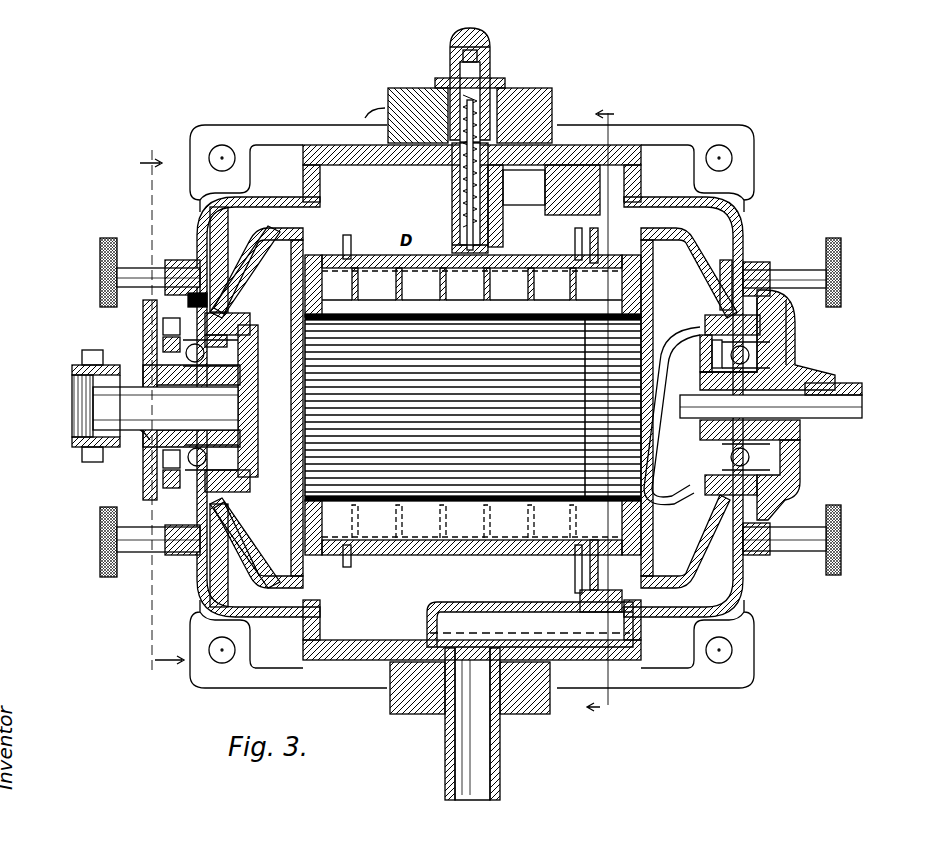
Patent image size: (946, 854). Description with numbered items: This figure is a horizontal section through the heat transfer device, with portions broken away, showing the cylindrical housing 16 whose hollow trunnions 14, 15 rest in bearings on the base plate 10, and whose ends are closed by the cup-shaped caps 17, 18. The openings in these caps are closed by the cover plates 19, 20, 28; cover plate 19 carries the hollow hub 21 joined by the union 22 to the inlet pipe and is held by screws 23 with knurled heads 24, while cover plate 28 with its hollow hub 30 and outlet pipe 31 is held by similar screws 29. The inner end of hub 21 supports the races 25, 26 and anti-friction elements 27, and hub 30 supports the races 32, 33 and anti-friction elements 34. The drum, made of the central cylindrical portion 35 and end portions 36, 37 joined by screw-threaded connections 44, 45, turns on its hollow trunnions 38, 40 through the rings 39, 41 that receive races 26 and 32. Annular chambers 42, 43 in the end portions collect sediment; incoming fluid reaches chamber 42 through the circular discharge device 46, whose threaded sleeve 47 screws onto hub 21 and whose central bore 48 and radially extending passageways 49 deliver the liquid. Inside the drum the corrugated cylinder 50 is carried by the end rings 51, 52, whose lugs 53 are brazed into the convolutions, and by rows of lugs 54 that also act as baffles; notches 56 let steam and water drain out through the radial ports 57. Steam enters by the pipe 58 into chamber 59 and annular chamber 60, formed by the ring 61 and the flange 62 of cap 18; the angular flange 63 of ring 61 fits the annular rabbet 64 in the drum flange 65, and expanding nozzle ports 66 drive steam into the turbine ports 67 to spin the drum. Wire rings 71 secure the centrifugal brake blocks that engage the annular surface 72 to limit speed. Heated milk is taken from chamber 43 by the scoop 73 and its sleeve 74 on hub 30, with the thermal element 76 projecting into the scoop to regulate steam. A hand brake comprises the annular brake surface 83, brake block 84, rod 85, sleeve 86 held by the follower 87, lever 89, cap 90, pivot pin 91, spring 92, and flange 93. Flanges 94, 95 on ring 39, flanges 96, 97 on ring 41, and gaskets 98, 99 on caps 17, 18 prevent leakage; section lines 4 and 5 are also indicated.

The base plate 10 is at (700, 680).
The hollow trunnion 14 is at (528, 714).
The hollow trunnion 15 is at (432, 88).
The cylindrical housing 16 is at (600, 660).
The cup-shaped cap 17 is at (232, 200).
The cup-shaped cap 18 is at (725, 205).
The cover plate 19 is at (143, 345).
The cover plate 20 is at (796, 335).
The hollow hub 21 is at (143, 450).
The union 22 is at (90, 402).
The screws 23 is at (178, 262).
The knurled heads 24 is at (100, 262).
The race 25 is at (170, 460).
The race 26 is at (235, 315).
The anti-friction elements 27 is at (220, 478).
The cover plate 28 is at (800, 460).
The screws 29 is at (755, 265).
The hollow hub 30 is at (838, 378).
The pipe 31 is at (850, 420).
The race 32 is at (704, 340).
The race 33 is at (715, 352).
The anti-friction elements 34 is at (752, 356).
The central cylindrical portion 35 is at (405, 262).
The end portion 36 is at (232, 290).
The end portion 37 is at (724, 262).
The hollow trunnion 38 is at (220, 336).
The ring 39 is at (163, 325).
The hollow trunnion 40 is at (735, 322).
The ring 41 is at (796, 322).
The annular chamber 42 is at (272, 228).
The annular chamber 43 is at (672, 240).
The screw-threaded connection 44 is at (338, 258).
The screw-threaded connection 45 is at (642, 259).
The circular discharge device 46 is at (258, 390).
The threaded sleeve 47 is at (240, 453).
The central bore 48 is at (245, 430).
The radially extending passageways 49 is at (236, 466).
The corrugated cylinder 50 is at (570, 330).
The end ring 51 is at (303, 292).
The end ring 52 is at (642, 281).
The lugs or teeth 53 is at (304, 305).
The lugs 54 is at (530, 290).
The notches 56 is at (462, 556).
The radially extending ports 57 is at (350, 236).
The pipe 58 is at (500, 765).
The chamber 59 is at (462, 602).
The annular chamber 60 is at (545, 188).
The ring 61 is at (565, 214).
The flange 62 is at (645, 150).
The angular flange 63 is at (575, 588).
The annular rabbet 64 is at (576, 235).
The flange 65 is at (575, 250).
The expanding nozzle ports 66 is at (598, 198).
The turbine ports 67 is at (596, 262).
The wire rings 71 is at (163, 343).
The annular surface 72 is at (160, 300).
The scoop 73 is at (685, 500).
The sleeve 74 is at (705, 380).
The thermal element 76 is at (865, 408).
The annular brake surface 83 is at (462, 250).
The brake block 84 is at (465, 238).
The rod 85 is at (462, 190).
The sleeve 86 is at (420, 120).
The follower 87 is at (505, 82).
The lever 89 is at (480, 62).
The cap 90 is at (455, 72).
The pivot pin 91 is at (492, 45).
The spring 92 is at (420, 128).
The flange 93 is at (492, 200).
The flange 94 is at (165, 272).
The flange 95 is at (210, 360).
The flange 96 is at (778, 318).
The flange 97 is at (705, 352).
The gasket 98 is at (176, 262).
The gasket 99 is at (772, 283).
The section line 4- 4 is at (594, 405).
The section line 5- 5 is at (162, 412).